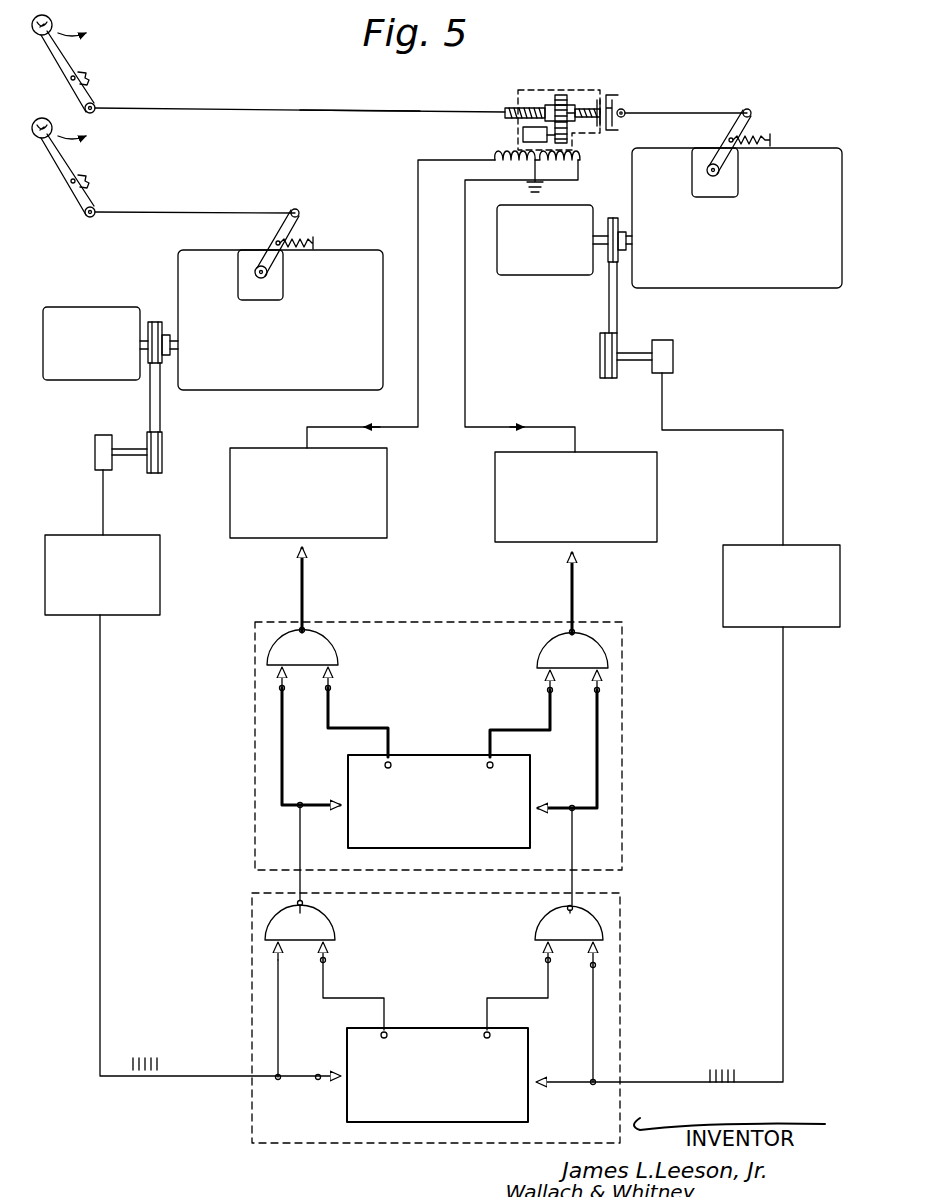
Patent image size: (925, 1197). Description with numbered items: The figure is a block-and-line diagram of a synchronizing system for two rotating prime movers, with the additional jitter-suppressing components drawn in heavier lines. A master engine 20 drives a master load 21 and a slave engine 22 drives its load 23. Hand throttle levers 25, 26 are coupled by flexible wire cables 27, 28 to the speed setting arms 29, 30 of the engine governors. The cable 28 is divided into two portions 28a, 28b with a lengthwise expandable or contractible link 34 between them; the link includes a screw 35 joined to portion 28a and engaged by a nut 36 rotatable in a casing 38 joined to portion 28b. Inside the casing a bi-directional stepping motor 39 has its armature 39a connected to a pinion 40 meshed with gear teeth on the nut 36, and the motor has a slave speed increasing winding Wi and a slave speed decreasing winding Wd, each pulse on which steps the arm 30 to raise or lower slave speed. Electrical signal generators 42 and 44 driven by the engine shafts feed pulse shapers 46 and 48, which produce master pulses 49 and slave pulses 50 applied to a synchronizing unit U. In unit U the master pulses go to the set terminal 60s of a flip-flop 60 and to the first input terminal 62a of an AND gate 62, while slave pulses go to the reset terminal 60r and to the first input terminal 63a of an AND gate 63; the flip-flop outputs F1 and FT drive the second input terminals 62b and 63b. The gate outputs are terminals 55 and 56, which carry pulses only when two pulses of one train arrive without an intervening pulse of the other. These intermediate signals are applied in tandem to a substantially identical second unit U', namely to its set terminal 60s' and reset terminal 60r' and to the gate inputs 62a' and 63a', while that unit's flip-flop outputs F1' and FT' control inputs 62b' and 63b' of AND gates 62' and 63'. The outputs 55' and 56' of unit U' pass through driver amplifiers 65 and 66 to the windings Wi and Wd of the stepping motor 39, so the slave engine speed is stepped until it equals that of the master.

The master engine 20 is at (178, 264).
The master load 21 is at (118, 307).
The slave engine 22 is at (785, 288).
The load of slave engine 23 is at (543, 275).
The hand throttle lever 25 is at (76, 164).
The hand throttle lever 26 is at (76, 60).
The flexible wire cable 27 is at (194, 212).
The flexible wire cable 28 is at (250, 106).
The cable portion 28a is at (334, 109).
The cable portion 28b is at (698, 108).
The speed setting arm 29 is at (300, 222).
The speed setting arm 30 is at (761, 125).
The expandable or contractible link 34 is at (568, 91).
The screw 35 is at (522, 108).
The nut 36 is at (560, 95).
The casing 38 is at (622, 99).
The bi-directional stepping motor 39 is at (500, 146).
The armature 39a is at (523, 133).
The pinion 40 is at (566, 140).
The electrical signal generator 42 is at (93, 446).
The electrical signal generator 44 is at (673, 356).
The pulse shaper 46 is at (140, 535).
The pulse shaper 48 is at (752, 545).
The master pulses 49 is at (152, 1057).
The slave pulses 50 is at (722, 1068).
The output terminal 55 is at (335, 905).
The output terminal 55' is at (324, 590).
The output terminal 56 is at (540, 908).
The output terminal 56' is at (548, 594).
The flip-flop 60 is at (492, 846).
The set terminal 60s is at (292, 1098).
The set terminal 60s' is at (248, 850).
The reset terminal 60r is at (565, 1103).
The reset terminal 60r' is at (626, 855).
The AND gate 62 is at (320, 923).
The AND gate 62' is at (325, 647).
The first input terminal 62a is at (235, 1008).
The first input terminal 62a' is at (268, 735).
The second input terminal 62b is at (354, 985).
The second input terminal 62b' is at (358, 712).
The AND gate 63 is at (547, 927).
The AND gate 63' is at (550, 649).
The first input terminal 63a is at (629, 1014).
The first input terminal 63a' is at (610, 739).
The second input terminal 63b is at (513, 986).
The second input terminal 63b' is at (518, 710).
The driver amplifier 65 is at (265, 450).
The driver amplifier 66 is at (620, 452).
The slave speed increasing winding Wi is at (505, 168).
The slave speed decreasing winding Wd is at (570, 168).
The output terminal F1 is at (395, 1018).
The complementary output terminal FT is at (463, 1018).
The output terminal F1' is at (399, 750).
The complementary output terminal FT' is at (466, 750).
The synchronizing unit U is at (436, 1034).
The second logic unit U' is at (444, 729).